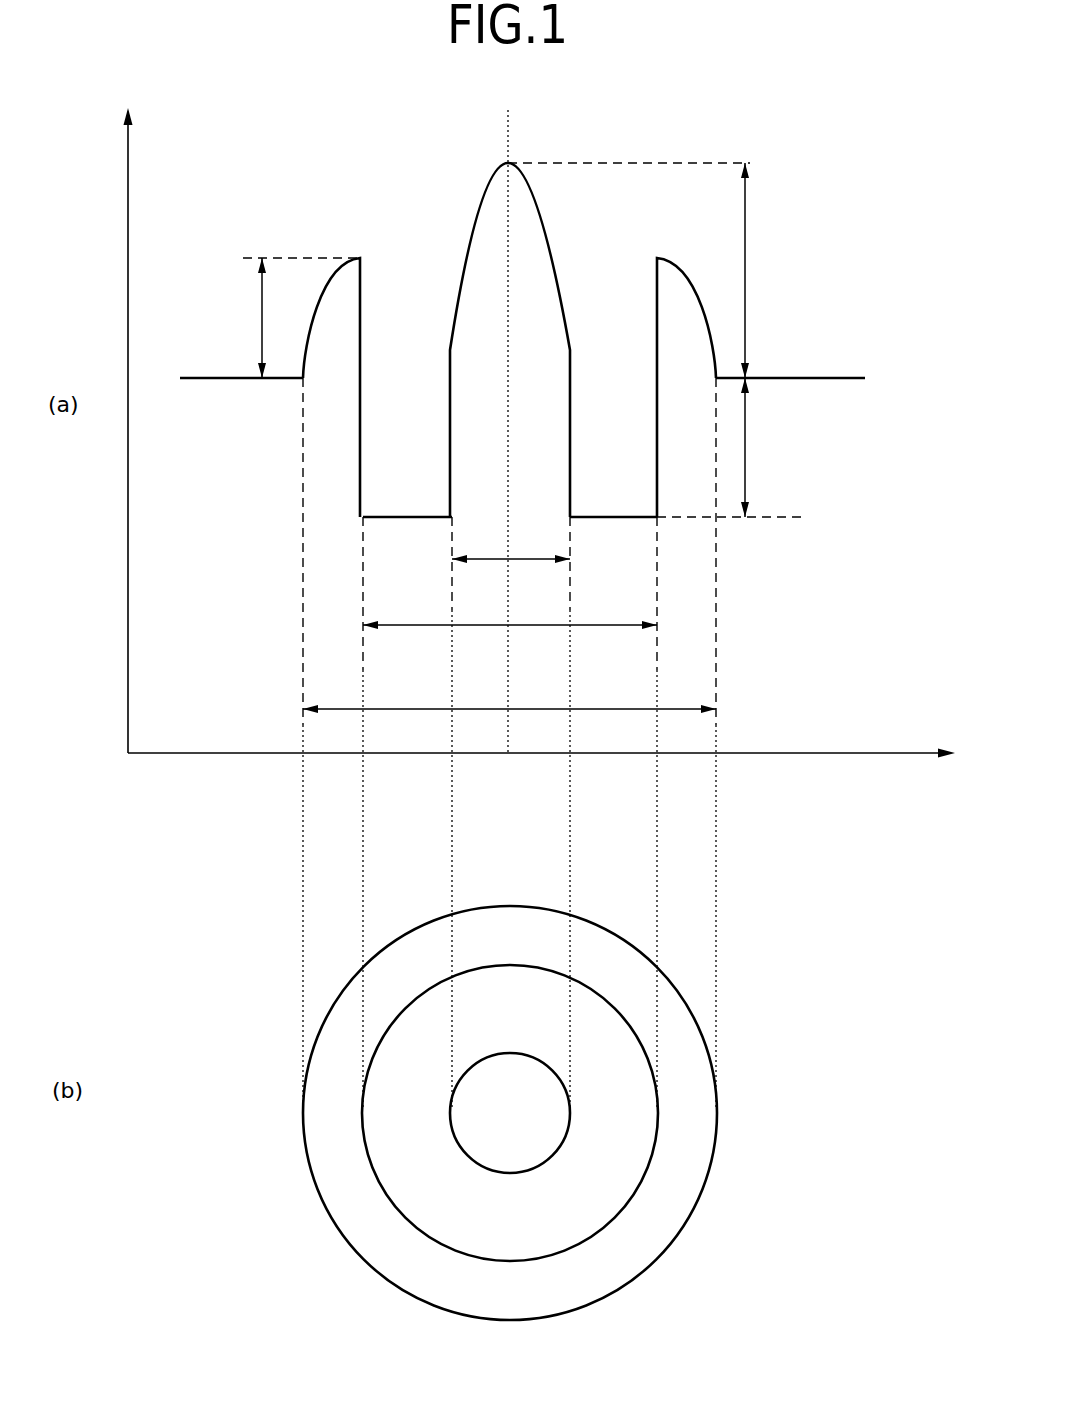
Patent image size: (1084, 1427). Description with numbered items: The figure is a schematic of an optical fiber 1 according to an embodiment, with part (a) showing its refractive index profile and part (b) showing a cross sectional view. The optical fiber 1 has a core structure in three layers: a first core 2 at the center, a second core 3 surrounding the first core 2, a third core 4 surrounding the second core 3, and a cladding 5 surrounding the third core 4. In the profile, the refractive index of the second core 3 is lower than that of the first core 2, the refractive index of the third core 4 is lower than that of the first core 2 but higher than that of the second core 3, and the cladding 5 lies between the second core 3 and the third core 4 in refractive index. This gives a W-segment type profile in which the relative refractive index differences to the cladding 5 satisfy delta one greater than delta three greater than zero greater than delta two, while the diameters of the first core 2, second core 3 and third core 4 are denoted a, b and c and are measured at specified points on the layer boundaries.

The optical fiber 1 is at (831, 108).
The first core 2 is at (468, 204).
The second core 3 is at (408, 500).
The third core 4 is at (333, 333).
The cladding 5 is at (811, 384).